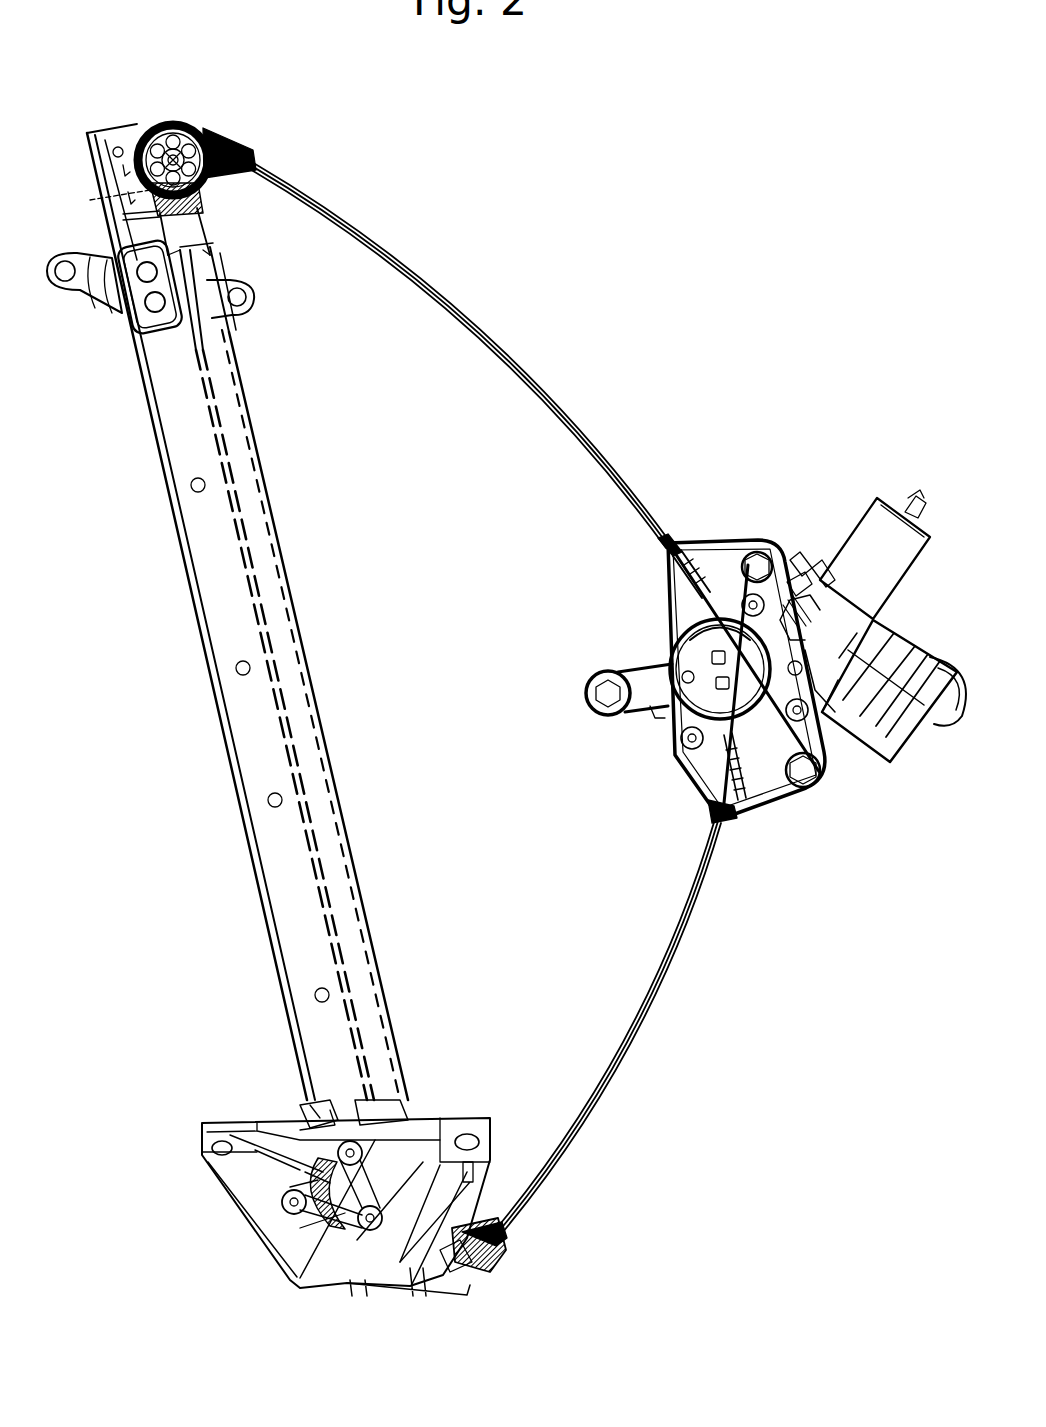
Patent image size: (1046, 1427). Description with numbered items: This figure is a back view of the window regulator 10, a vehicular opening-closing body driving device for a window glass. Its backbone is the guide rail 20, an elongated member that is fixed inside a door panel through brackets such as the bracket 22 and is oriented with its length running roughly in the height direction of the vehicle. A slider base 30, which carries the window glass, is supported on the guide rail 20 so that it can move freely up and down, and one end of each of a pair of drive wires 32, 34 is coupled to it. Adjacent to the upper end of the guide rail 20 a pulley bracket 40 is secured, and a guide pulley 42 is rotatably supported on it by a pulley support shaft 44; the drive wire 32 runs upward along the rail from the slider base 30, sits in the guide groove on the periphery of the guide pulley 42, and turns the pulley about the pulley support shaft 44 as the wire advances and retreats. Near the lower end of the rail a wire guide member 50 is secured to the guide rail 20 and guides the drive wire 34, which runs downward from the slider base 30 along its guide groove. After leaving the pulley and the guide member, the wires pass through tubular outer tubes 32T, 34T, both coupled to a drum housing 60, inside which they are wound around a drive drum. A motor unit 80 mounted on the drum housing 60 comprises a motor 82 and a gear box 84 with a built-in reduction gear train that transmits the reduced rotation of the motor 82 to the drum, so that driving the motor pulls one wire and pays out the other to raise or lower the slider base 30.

The window regulator 10 is at (614, 246).
The guide rail 20 is at (222, 604).
The bracket 22 is at (80, 290).
The slider base 30 is at (268, 1222).
The drive wire 32 is at (540, 393).
The outer tube 32T is at (516, 354).
The drive wire 34 is at (656, 984).
The outer tube 34T is at (645, 1018).
The pulley bracket 40 is at (212, 128).
The guide pulley 42 is at (158, 124).
The pulley support shaft 44 is at (178, 124).
The wire guide member 50 is at (462, 1272).
The drum housing 60 is at (672, 752).
The motor unit 80 is at (866, 506).
The motor 82 is at (890, 560).
The gear box 84 is at (890, 740).